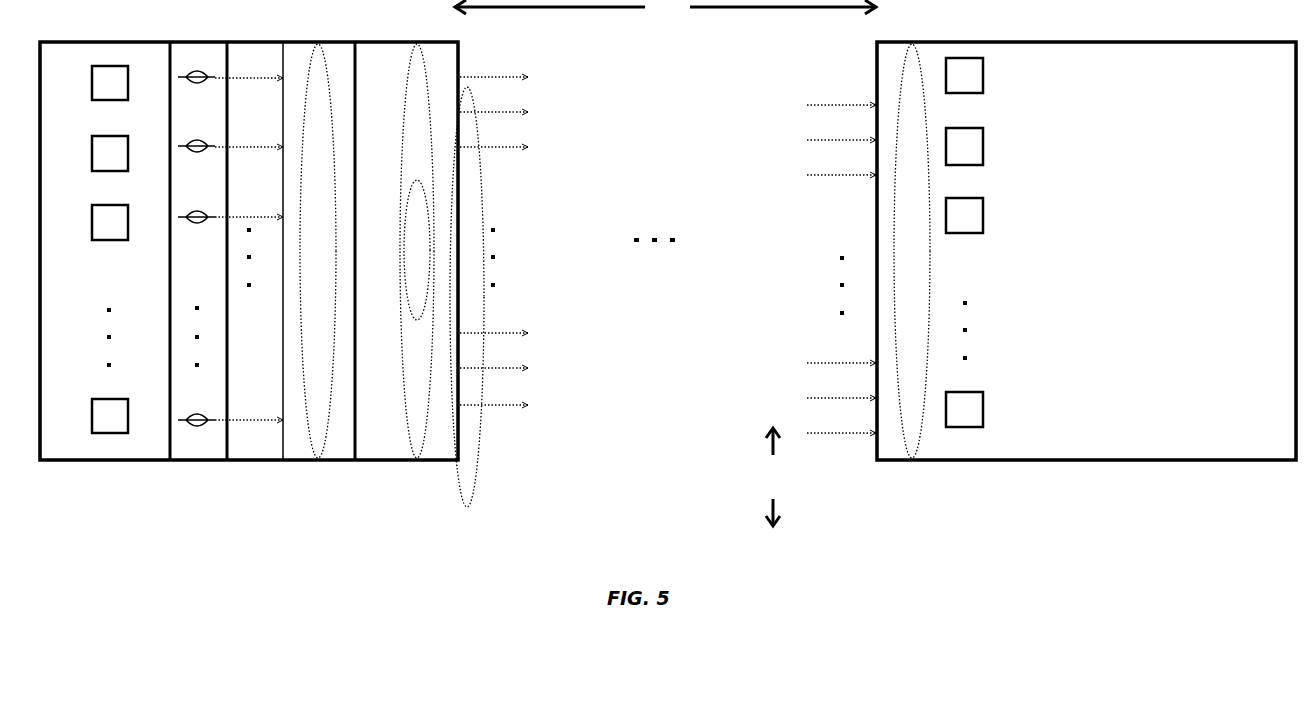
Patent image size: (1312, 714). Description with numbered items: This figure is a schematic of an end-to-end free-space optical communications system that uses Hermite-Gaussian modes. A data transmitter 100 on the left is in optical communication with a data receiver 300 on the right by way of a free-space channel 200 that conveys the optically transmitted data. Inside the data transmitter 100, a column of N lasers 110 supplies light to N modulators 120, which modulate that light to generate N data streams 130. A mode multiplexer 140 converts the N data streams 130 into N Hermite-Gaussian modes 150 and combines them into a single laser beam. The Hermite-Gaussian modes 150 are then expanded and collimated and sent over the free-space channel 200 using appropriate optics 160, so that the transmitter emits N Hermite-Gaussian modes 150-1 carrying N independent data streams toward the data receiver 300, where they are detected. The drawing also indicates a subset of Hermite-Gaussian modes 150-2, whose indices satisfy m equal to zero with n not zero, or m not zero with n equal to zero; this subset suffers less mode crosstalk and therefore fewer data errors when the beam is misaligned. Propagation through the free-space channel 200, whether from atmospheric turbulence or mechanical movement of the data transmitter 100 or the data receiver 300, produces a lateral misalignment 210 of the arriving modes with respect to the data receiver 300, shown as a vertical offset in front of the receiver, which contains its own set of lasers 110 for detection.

The data transmitter 100 is at (249, 237).
The lasers 110 is at (540, 258).
The modulators 120 is at (195, 265).
The data streams 130 is at (249, 251).
The mode multiplexer 140 is at (489, 292).
The Hermite-Gaussian modes 150 is at (403, 253).
The Hermite-Gaussian modes transmitted 150-1 is at (423, 251).
The subset of Hermite-Gaussian modes 150-2 is at (427, 250).
The optics 160 is at (376, 251).
The free-space channel 200 is at (665, 9).
The lateral misalignment 210 is at (782, 477).
The data receiver 300 is at (1051, 236).